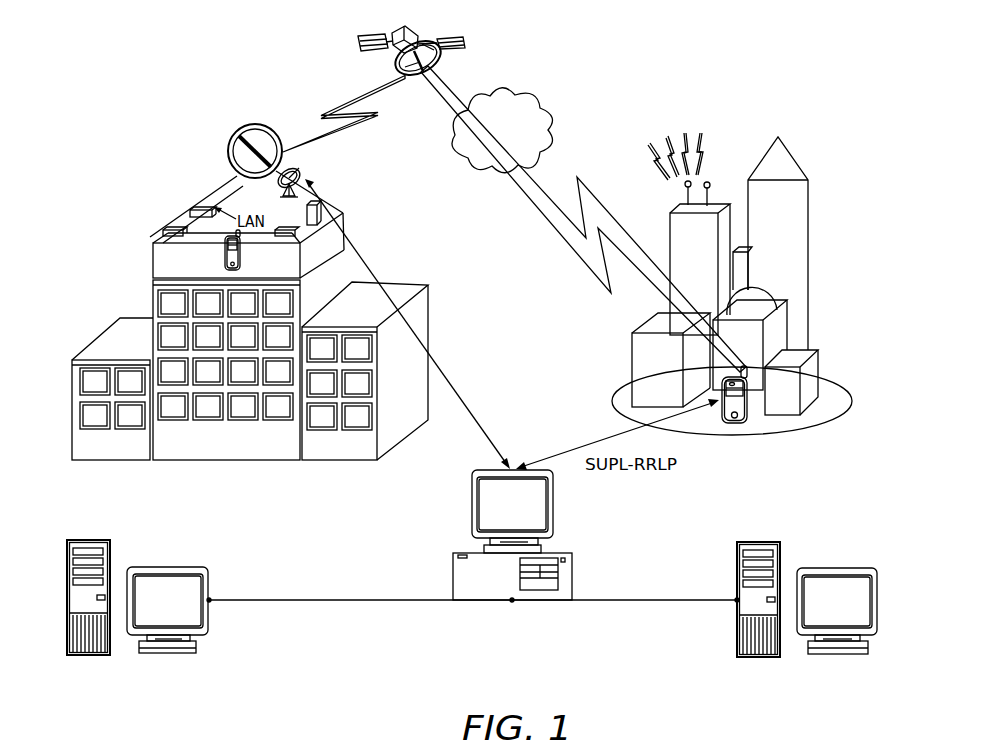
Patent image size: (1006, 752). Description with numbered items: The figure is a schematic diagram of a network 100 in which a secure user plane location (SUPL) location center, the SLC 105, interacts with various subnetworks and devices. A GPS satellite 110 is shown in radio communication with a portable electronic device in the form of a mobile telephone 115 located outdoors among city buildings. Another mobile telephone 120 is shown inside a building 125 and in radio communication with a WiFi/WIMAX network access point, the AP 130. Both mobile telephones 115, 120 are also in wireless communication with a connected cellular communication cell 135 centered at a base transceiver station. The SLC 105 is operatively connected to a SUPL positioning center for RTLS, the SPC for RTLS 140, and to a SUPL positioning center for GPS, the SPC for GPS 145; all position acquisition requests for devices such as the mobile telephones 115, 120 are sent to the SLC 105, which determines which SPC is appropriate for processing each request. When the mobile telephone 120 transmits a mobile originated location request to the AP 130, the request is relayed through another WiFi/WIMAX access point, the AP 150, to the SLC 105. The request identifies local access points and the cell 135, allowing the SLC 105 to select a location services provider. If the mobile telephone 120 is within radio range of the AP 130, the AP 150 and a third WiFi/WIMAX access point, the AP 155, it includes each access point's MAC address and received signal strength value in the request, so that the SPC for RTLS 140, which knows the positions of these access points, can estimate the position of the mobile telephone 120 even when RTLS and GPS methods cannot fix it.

The network 100 is at (932, 80).
The SUPL location center (SLC) 105 is at (553, 503).
The GPS satellite 110 is at (465, 43).
The mobile telephone 115 is at (734, 421).
The mobile telephone 120 is at (241, 258).
The building 125 is at (72, 366).
The WiFi/WIMAX network access point (AP) 130 is at (190, 213).
The connected cellular communication cell 135 is at (692, 124).
The SUPL positioning center (SPC) for RTLS 140 is at (193, 567).
The SUPL positioning center (SPC) for GPS 145 is at (864, 568).
The WiFi/WIMAX AP 150 is at (290, 168).
The third WiFi/WIMAX AP 155 is at (163, 235).